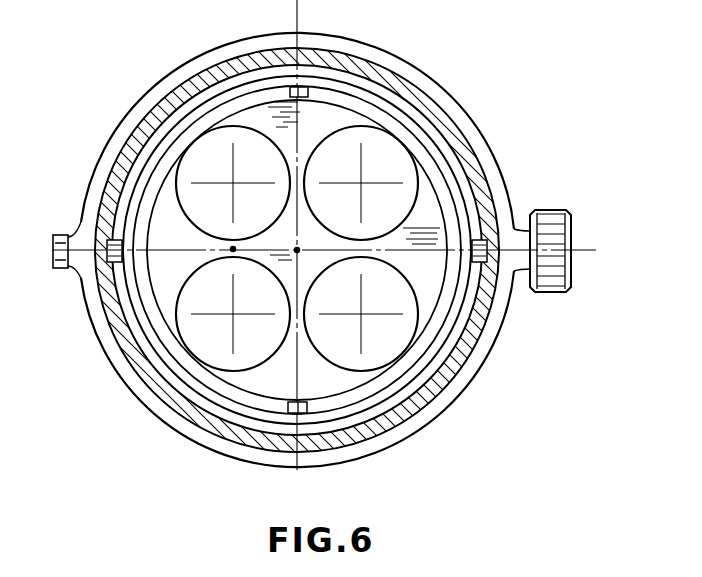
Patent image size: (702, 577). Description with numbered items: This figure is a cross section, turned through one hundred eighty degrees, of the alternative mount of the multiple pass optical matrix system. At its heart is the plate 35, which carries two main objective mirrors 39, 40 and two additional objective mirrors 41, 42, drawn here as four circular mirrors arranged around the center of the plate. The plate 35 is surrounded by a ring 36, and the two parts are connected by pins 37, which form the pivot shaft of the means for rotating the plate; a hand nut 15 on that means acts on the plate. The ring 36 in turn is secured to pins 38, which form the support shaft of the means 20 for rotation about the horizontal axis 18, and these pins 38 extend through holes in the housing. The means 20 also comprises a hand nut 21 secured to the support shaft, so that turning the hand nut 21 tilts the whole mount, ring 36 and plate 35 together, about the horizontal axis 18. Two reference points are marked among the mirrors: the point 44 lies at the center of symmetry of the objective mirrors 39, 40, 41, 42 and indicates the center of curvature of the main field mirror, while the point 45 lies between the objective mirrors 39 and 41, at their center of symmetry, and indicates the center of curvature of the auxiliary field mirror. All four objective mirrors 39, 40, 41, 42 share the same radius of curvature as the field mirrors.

The hand nut 15 is at (300, 10).
The plate 35 is at (253, 115).
The ring 36 is at (392, 112).
The pins 37 is at (300, 402).
The pins 38 is at (486, 214).
The main objective mirror 39 is at (182, 205).
The main objective mirror 40 is at (400, 287).
The additional objective mirror 41 is at (275, 353).
The additional objective mirror 42 is at (374, 185).
The point 44 is at (298, 249).
The point 45 is at (230, 251).
The hand nut 21 is at (555, 216).
The horizontal axis 18 is at (594, 251).
The means for rotation 20 is at (524, 292).